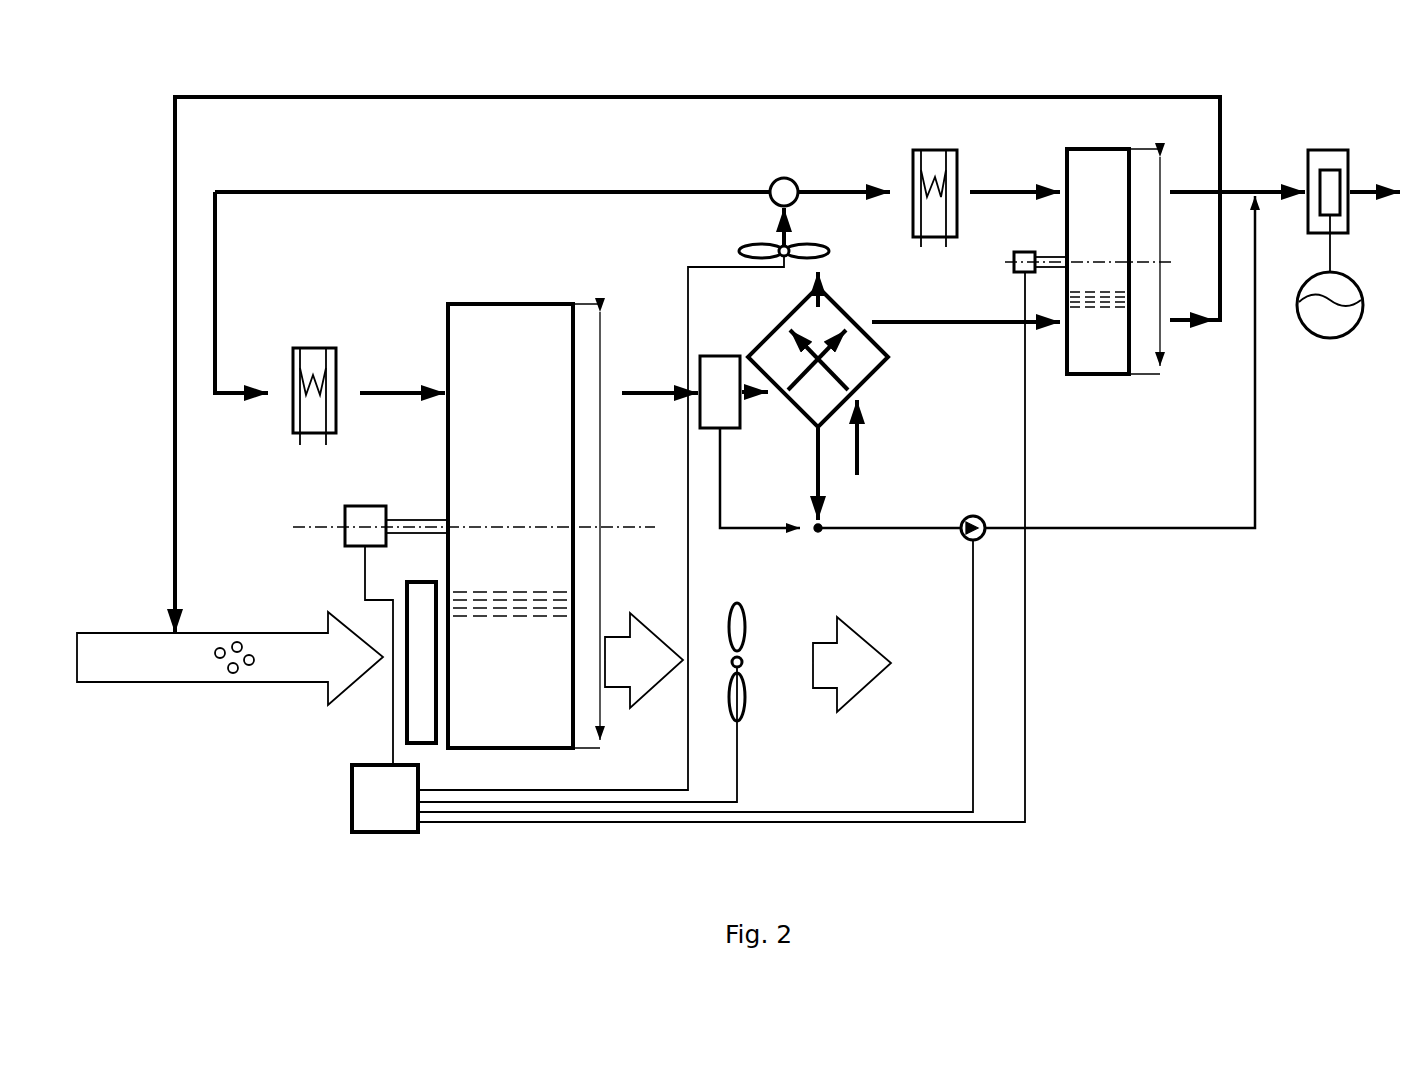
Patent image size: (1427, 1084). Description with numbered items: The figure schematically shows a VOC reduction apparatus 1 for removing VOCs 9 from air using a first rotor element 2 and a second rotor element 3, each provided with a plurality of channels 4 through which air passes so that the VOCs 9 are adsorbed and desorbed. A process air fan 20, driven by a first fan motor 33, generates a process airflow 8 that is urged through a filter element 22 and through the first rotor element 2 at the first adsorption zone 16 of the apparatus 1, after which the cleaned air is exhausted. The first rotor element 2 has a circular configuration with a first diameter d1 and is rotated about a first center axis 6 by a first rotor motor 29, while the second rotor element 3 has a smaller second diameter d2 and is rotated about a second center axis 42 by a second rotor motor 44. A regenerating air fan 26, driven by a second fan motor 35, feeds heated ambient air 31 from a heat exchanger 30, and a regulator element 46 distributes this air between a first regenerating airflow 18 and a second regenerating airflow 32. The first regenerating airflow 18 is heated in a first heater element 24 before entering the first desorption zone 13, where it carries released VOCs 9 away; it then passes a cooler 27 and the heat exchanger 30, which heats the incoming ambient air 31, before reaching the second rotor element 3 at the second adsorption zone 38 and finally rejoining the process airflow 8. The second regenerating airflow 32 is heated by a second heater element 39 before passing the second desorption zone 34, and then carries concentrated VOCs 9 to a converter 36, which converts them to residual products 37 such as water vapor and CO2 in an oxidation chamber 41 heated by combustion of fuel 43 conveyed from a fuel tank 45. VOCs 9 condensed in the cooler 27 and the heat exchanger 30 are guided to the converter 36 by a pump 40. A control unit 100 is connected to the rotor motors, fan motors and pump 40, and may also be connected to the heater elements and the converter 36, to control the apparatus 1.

The VOC reduction apparatus 1 is at (137, 190).
The first rotor element 2 is at (492, 304).
The second rotor element 3 is at (1093, 150).
The channels 4 is at (465, 590).
The first center axis 6 is at (630, 527).
The process airflow 8 is at (150, 683).
The VOCs 9 is at (232, 673).
The first desorption zone 13 is at (422, 360).
The first adsorption zone 16 is at (472, 684).
The first regenerating airflow 18 is at (505, 100).
The process air fan 20 is at (748, 690).
The filter element 22 is at (400, 590).
The first heater element 24 is at (293, 425).
The regenerating air fan 26 is at (745, 251).
The cooler 27 is at (728, 356).
The first rotor motor 29 is at (345, 535).
The heat exchanger 30 is at (887, 360).
The ambient air 31 is at (860, 445).
The second regenerating airflow 32 is at (826, 185).
The first fan motor 33 is at (750, 640).
The second desorption zone 34 is at (1046, 155).
The second fan motor 35 is at (792, 246).
The converter 36 is at (1336, 150).
The residual products 37 is at (1365, 190).
The second adsorption zone 38 is at (1056, 345).
The second heater element 39 is at (940, 150).
The pump 40 is at (984, 538).
The oxidation chamber 41 is at (1340, 208).
The second center axis 42 is at (1013, 262).
The fuel 43 is at (1343, 330).
The second rotor motor 44 is at (1022, 278).
The fuel tank 45 is at (1360, 286).
The regulator element 46 is at (770, 182).
The control unit 100 is at (352, 805).
The first diameter d1 is at (600, 480).
The second diameter d2 is at (1160, 287).